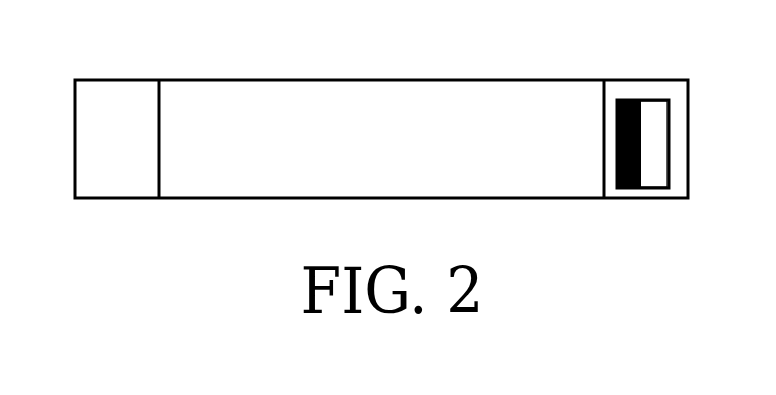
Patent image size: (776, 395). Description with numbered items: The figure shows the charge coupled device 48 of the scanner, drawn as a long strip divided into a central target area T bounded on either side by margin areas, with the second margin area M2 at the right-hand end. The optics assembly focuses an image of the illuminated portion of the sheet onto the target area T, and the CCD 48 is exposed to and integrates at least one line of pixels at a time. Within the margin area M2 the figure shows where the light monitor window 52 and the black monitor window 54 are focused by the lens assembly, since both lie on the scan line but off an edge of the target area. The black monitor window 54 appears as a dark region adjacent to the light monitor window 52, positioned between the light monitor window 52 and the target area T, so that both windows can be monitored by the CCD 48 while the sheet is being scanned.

The charge coupled device (CCD) 48 is at (381, 80).
The margin area M2 is at (645, 80).
The black monitor window (BMW) 54 is at (627, 188).
The light monitor window (LMW) 52 is at (652, 188).